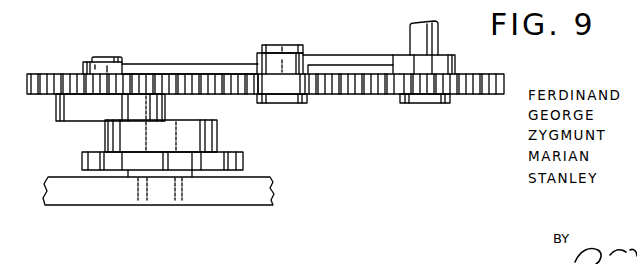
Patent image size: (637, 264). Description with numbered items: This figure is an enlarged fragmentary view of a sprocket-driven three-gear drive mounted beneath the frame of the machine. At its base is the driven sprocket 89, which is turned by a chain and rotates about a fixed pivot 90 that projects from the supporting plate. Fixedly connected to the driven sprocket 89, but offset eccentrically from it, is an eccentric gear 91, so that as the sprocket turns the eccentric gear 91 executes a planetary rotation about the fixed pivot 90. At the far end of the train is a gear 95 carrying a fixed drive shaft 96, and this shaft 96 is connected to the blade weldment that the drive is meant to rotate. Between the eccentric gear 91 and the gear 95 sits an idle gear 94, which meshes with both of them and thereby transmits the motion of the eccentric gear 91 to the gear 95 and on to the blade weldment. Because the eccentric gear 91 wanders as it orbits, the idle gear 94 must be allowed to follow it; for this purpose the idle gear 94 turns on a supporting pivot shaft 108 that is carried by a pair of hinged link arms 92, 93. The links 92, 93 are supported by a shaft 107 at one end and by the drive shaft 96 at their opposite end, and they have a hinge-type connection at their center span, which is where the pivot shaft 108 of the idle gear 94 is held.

The driven sprocket 89 is at (232, 161).
The fixed pivot 90 is at (160, 205).
The eccentric gear 91 is at (52, 74).
The hinged link arm 92 is at (238, 64).
The hinged link arm 93 is at (369, 55).
The idle gear 94 is at (344, 78).
The gear 95 is at (469, 96).
The fixed drive shaft 96 is at (433, 38).
The shaft 107 is at (110, 57).
The supporting pivot shaft 108 is at (293, 45).